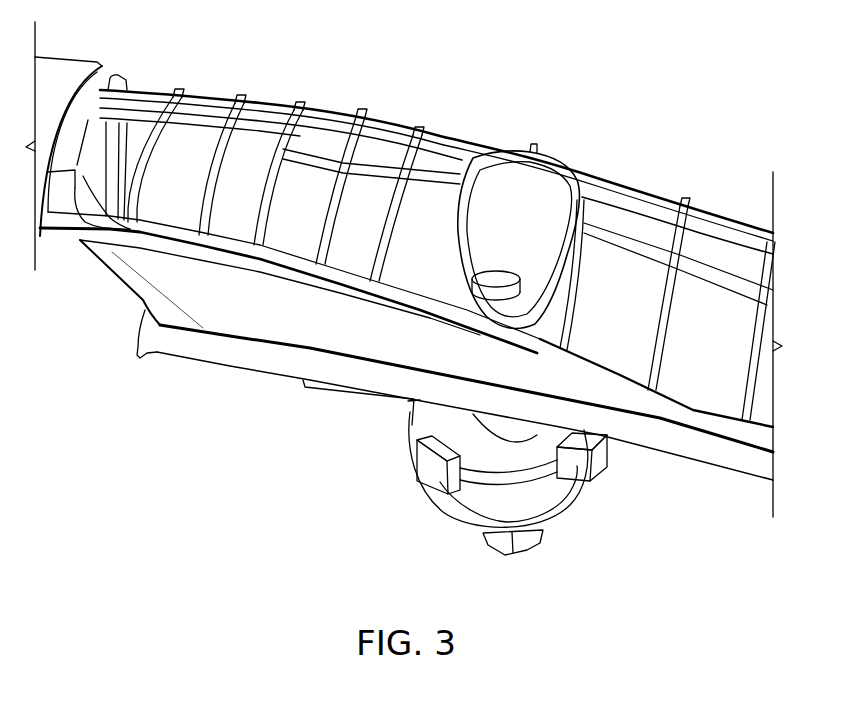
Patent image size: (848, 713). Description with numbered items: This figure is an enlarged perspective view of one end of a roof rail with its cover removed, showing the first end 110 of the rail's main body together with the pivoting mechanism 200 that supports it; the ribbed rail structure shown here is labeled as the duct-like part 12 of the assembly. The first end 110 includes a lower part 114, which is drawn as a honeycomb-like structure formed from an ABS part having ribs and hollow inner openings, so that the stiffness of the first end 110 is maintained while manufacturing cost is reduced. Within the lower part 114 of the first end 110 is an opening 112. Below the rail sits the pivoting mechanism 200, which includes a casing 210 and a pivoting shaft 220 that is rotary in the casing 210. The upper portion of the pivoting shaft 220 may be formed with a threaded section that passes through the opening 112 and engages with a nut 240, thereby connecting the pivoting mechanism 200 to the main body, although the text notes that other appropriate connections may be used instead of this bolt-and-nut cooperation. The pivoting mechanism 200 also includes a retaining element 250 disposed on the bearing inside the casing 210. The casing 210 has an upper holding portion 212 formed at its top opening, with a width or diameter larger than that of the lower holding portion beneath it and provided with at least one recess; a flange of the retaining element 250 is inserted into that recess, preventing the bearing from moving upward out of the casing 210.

The air duct 12 is at (467, 116).
The first end 110 is at (58, 68).
The opening 112 is at (542, 185).
The lower part 114 is at (147, 282).
The pivoting mechanism 200 is at (560, 515).
The casing 210 is at (457, 503).
The upper holding portion 212 is at (590, 461).
The pivoting shaft 220 is at (500, 281).
The nut 240 is at (526, 283).
The retaining element 250 is at (412, 412).